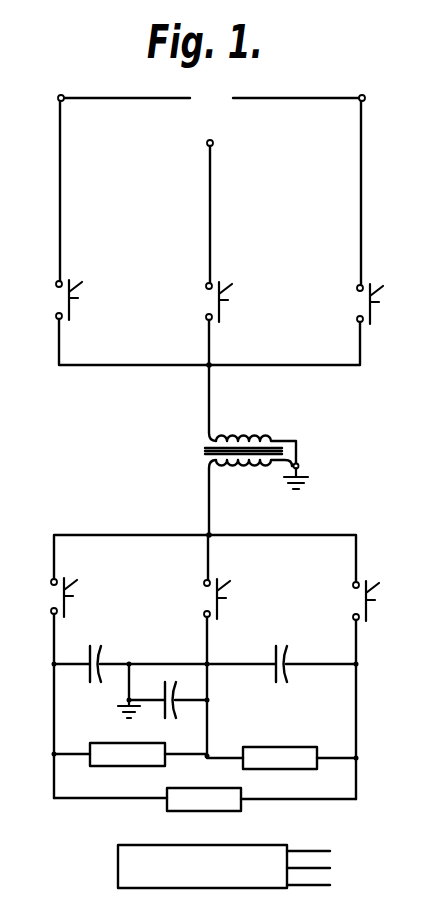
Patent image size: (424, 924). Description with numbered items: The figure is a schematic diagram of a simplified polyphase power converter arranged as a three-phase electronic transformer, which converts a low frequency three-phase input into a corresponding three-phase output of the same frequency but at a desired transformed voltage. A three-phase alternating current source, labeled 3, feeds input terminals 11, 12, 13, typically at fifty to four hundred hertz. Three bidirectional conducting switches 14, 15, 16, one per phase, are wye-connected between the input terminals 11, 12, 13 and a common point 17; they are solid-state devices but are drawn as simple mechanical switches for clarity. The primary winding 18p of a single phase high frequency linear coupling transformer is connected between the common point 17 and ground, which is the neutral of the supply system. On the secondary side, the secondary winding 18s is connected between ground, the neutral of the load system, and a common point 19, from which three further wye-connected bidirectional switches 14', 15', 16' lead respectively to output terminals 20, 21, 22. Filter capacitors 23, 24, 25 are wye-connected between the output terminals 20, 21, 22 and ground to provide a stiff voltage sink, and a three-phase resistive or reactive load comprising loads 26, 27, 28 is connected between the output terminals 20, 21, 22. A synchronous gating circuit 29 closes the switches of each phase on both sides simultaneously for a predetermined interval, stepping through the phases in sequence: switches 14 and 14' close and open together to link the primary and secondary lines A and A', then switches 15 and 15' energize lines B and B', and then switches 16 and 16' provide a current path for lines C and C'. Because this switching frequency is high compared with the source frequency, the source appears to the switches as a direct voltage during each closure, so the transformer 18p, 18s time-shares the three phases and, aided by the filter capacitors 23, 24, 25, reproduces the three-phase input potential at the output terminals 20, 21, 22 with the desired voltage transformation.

The three-phase a-c source 3 is at (279, 107).
The input terminal 11 is at (58, 101).
The input terminal 12 is at (206, 143).
The input terminal 13 is at (361, 101).
The bidirectional conducting switch 14 is at (83, 290).
The bidirectional conducting switch 15 is at (234, 291).
The bidirectional conducting switch 16 is at (384, 294).
The common point 17 is at (211, 363).
The primary winding 18p is at (250, 431).
The secondary winding 18s is at (240, 474).
The common point 19 is at (210, 537).
The bidirectional conducting switch 14' is at (79, 592).
The bidirectional conducting switch 15' is at (233, 593).
The bidirectional conducting switch 16' is at (383, 595).
The output terminal 20 is at (52, 754).
The output terminal 21 is at (206, 758).
The output terminal 22 is at (358, 758).
The filter capacitor 23 is at (101, 651).
The filter capacitor 24 is at (273, 652).
The filter capacitor 25 is at (178, 712).
The load 26 is at (100, 767).
The load 27 is at (297, 770).
The load 28 is at (241, 809).
The synchronous gating circuit 29 is at (127, 844).
The primary side line A is at (77, 121).
The primary side line B is at (227, 181).
The primary side line C is at (345, 165).
The secondary side line A' is at (37, 706).
The secondary side line B' is at (220, 687).
The secondary side line C' is at (371, 709).